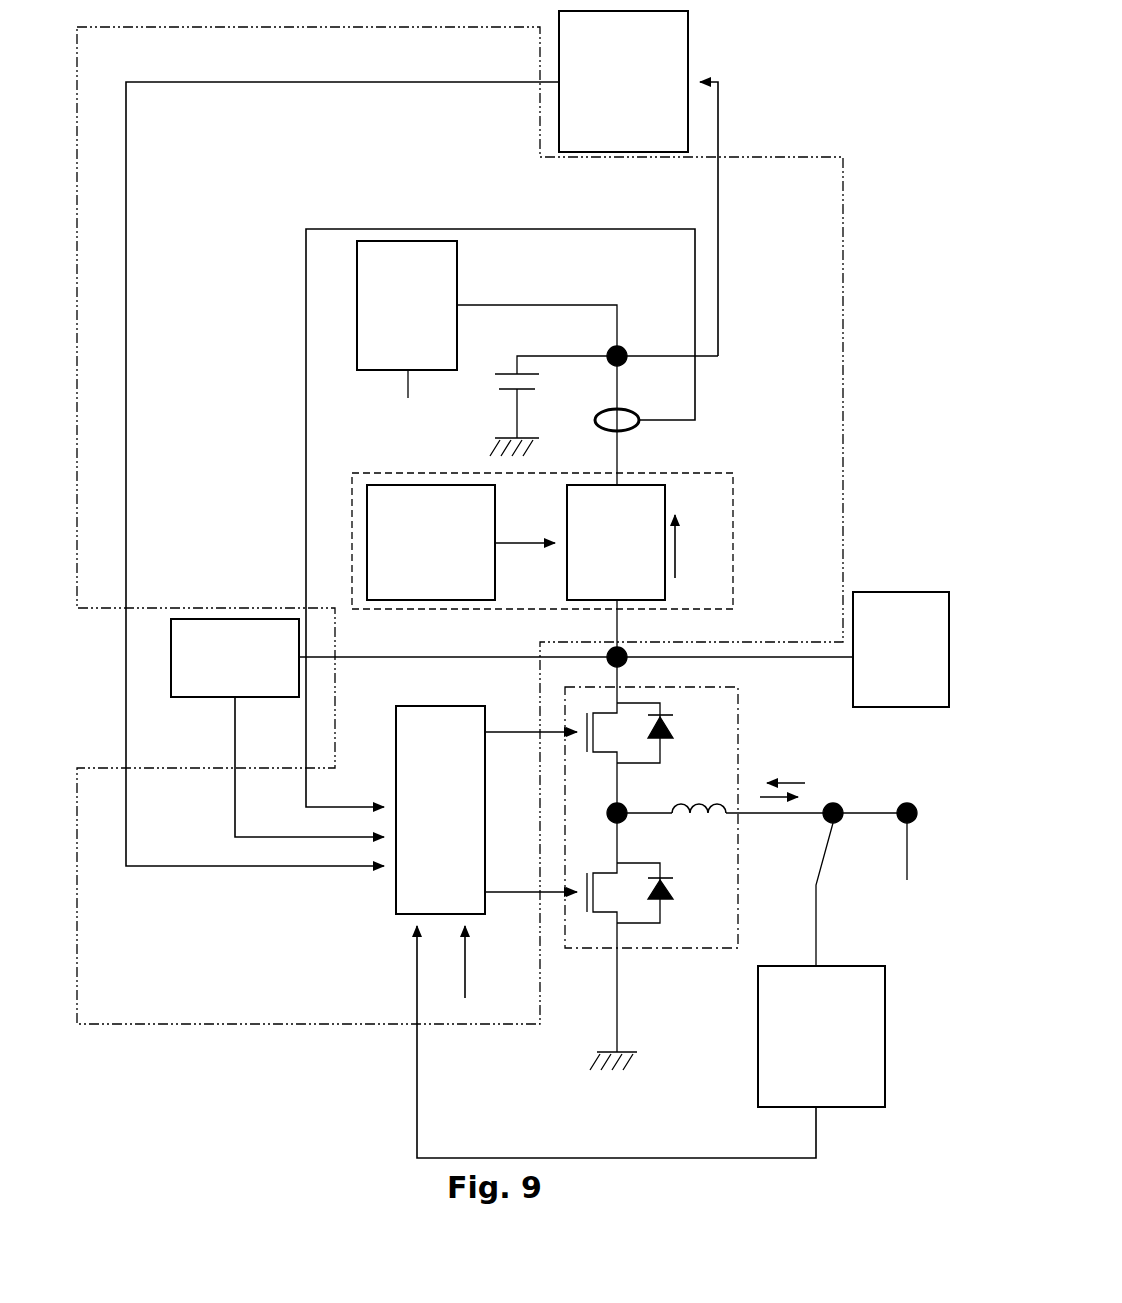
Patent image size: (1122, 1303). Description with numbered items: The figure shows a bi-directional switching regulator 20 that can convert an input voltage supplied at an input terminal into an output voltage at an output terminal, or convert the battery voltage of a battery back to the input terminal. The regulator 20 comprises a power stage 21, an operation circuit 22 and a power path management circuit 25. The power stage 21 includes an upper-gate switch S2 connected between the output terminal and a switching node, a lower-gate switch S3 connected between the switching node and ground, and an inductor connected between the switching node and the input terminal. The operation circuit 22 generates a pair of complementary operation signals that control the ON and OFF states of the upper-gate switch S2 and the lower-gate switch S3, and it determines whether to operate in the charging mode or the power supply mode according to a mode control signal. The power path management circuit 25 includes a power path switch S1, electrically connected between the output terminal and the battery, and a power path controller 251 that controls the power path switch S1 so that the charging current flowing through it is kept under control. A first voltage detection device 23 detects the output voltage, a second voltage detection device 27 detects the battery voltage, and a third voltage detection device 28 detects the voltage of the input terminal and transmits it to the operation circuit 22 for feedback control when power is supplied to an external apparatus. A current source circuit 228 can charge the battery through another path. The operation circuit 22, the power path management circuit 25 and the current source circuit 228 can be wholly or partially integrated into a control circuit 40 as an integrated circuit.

The bi-directional switching regulator 20 is at (518, 584).
The control circuit 40 is at (167, 1027).
The second voltage detection device 27 is at (611, 143).
The current source circuit 228 is at (390, 357).
The power path management circuit 25 is at (545, 509).
The power path controller 251 is at (414, 593).
The power path switch S1 is at (604, 593).
The first voltage detection device 23 is at (247, 688).
The operation circuit 22 is at (429, 833).
The power stage 21 is at (656, 855).
The upper-gate switch S2 is at (619, 733).
The lower-gate switch S3 is at (619, 893).
The third voltage detection device 28 is at (809, 1097).